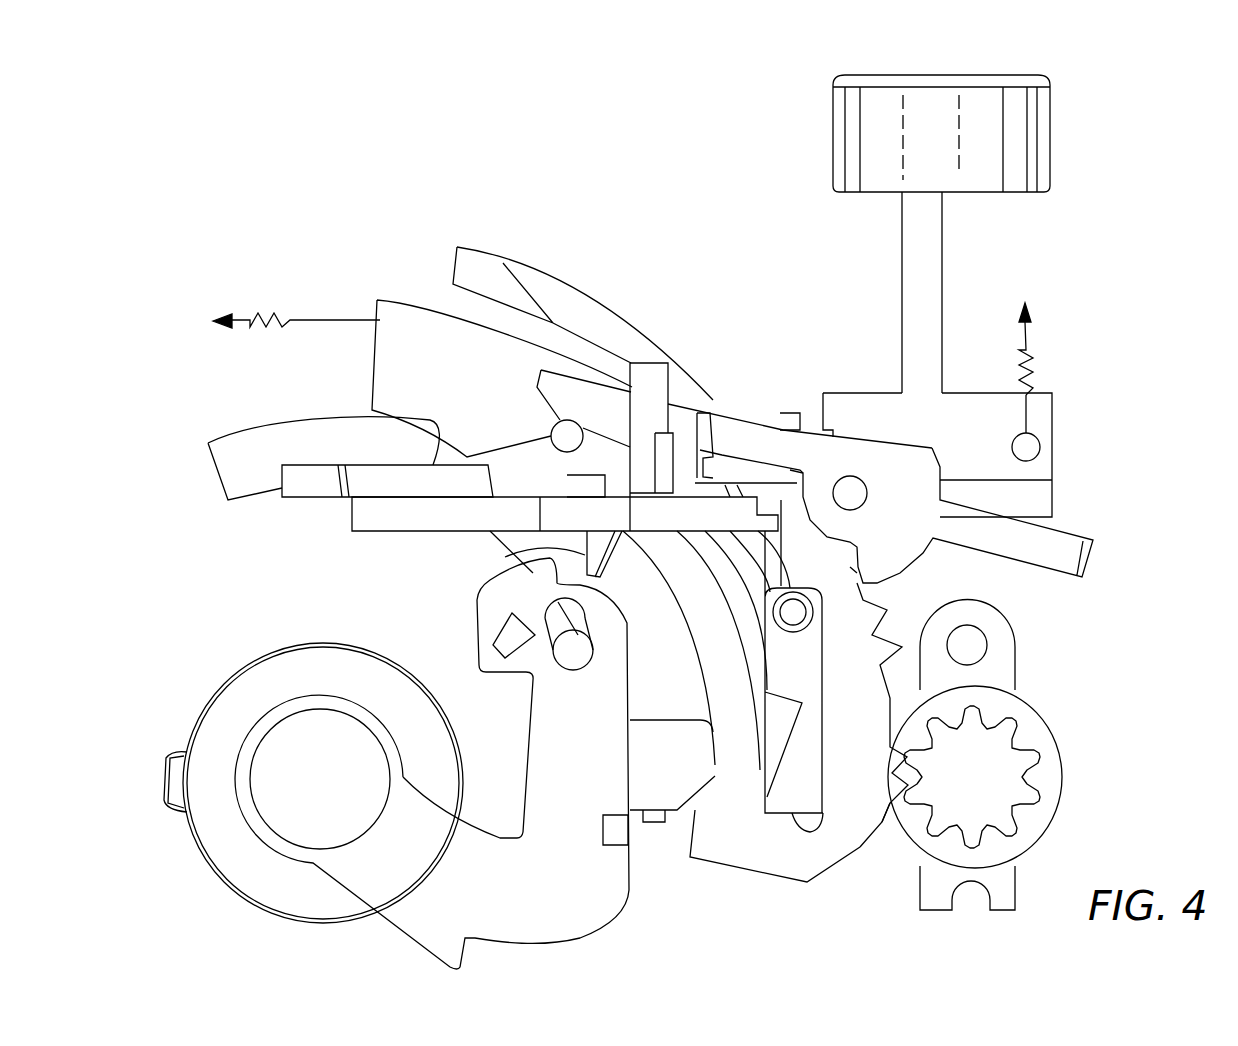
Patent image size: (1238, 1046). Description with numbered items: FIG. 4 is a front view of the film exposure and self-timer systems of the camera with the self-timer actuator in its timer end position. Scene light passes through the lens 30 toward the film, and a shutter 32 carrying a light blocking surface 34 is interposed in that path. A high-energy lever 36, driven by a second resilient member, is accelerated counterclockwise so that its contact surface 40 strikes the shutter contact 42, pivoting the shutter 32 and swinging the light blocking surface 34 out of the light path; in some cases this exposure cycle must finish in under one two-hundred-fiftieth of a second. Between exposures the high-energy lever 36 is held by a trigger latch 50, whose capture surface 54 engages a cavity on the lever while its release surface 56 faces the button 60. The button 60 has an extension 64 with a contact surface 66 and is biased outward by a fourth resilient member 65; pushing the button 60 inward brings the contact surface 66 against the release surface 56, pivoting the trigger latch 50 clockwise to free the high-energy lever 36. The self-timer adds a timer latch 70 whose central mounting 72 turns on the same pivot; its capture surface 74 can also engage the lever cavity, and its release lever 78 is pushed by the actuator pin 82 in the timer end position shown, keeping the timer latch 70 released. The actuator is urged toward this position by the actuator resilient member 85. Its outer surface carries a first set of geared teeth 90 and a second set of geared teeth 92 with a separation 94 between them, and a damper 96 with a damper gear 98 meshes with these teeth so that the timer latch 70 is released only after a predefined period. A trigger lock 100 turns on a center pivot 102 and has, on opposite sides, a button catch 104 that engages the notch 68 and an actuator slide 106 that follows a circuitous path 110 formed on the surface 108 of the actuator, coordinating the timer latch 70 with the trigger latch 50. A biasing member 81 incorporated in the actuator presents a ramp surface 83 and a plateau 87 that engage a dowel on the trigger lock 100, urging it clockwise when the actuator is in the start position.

The lens 30 is at (283, 707).
The shutter 32 is at (528, 896).
The light blocking surface 34 is at (296, 775).
The high-energy lever 36 is at (370, 530).
The contact surface 40 is at (506, 557).
The shutter contact 42 is at (512, 575).
The trigger latch 50 is at (1017, 507).
The capture surface 54 is at (663, 420).
The release surface 56 is at (1043, 490).
The button 60 is at (1053, 152).
The extension 64 is at (1040, 393).
The fourth resilient member 65 is at (1037, 353).
The contact surface 66 is at (1043, 440).
The notch 68 is at (830, 433).
The timer latch 70 is at (925, 487).
The central mounting 72 is at (850, 483).
The capture surface 74 is at (710, 463).
The release lever 78 is at (547, 383).
The biasing member 81 is at (603, 320).
The actuator pin 82 is at (560, 430).
The ramp surface 83 is at (528, 290).
The actuator resilient member 85 is at (283, 318).
The plateau 87 is at (472, 260).
The first set of geared teeth 90 is at (887, 597).
The second set of geared teeth 92 is at (897, 797).
The separation 94 is at (907, 680).
The damper 96 is at (1047, 758).
The damper gear 98 is at (993, 795).
The trigger lock 100 is at (807, 675).
The center pivot 102 is at (787, 612).
The button catch 104 is at (793, 483).
The actuator slide 106 is at (797, 807).
The surface 108 is at (837, 865).
The circuitous path 110 is at (760, 773).